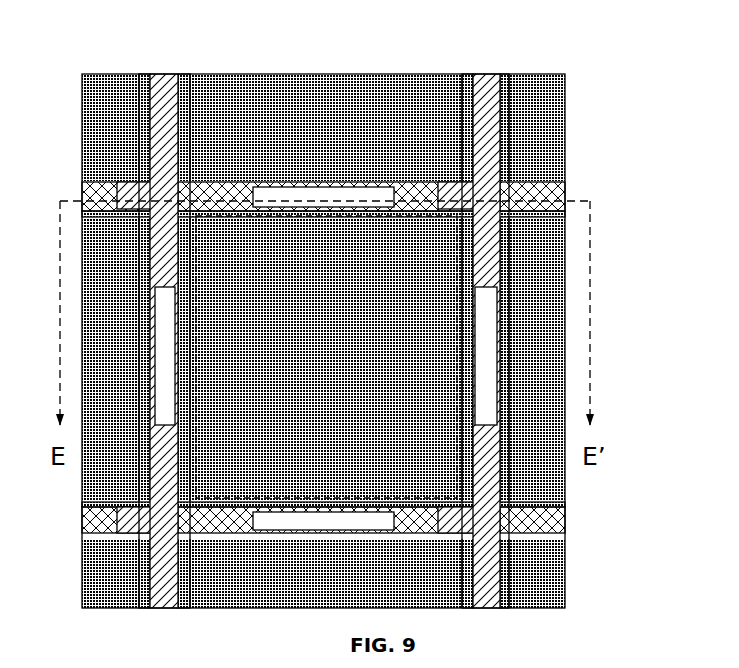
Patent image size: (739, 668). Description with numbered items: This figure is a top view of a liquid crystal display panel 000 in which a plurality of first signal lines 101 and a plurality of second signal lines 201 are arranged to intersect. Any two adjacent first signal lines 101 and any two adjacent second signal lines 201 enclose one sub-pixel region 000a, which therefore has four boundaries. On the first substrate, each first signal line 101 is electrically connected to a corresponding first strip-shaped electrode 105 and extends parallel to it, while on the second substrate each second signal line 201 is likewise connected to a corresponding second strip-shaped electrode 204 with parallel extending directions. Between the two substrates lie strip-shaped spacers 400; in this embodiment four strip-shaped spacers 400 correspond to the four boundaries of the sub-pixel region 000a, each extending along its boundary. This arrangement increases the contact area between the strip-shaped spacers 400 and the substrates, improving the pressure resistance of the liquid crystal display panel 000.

The liquid crystal display panel 000 is at (718, 27).
The sub-pixel region 000a is at (433, 385).
The first signal line 101 is at (485, 95).
The first strip-shaped electrode 105 is at (544, 140).
The second signal line 201 is at (505, 195).
The second strip-shaped electrode 204 is at (507, 263).
The strip-shaped spacer 400 is at (342, 193).